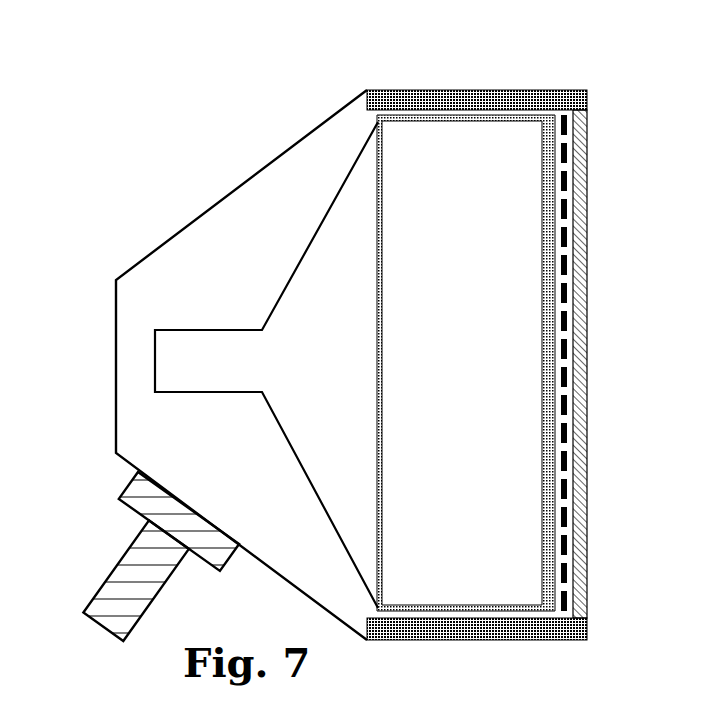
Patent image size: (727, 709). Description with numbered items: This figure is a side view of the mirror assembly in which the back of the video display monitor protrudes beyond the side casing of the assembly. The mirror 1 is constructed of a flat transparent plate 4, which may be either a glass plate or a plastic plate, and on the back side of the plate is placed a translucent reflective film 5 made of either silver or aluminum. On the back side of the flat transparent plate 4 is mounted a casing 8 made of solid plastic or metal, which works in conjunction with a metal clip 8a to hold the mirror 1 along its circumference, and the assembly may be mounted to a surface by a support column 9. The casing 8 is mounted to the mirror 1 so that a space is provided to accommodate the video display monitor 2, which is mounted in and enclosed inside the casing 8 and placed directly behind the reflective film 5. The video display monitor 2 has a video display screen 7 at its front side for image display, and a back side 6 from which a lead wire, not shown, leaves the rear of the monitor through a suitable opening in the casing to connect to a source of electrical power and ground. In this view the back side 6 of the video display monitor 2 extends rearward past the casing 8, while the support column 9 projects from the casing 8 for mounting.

The mirror 1 is at (594, 89).
The video display monitor 2 is at (478, 248).
The flat transparent plate 4 is at (587, 265).
The translucent reflective film 5 is at (563, 375).
The back side 6 is at (275, 305).
The video display screen 7 is at (550, 498).
The casing 8 is at (267, 167).
The metal clip 8a is at (583, 620).
The support column 9 is at (123, 593).